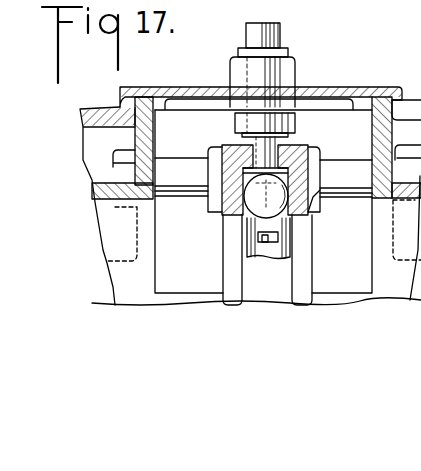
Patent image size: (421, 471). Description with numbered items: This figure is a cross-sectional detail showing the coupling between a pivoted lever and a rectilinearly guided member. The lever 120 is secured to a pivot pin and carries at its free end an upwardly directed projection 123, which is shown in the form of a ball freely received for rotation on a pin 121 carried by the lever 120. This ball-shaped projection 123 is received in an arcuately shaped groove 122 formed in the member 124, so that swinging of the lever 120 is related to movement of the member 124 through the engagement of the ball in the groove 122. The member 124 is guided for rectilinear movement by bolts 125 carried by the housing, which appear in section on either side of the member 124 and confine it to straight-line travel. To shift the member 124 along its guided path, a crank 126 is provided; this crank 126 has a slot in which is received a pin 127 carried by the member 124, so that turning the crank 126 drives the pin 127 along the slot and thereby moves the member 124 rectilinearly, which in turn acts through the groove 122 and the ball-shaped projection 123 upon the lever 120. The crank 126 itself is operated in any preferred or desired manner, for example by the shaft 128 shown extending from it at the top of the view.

The lever 120 is at (252, 247).
The pin 121 is at (221, 231).
The arcuately shaped groove 122 is at (245, 160).
The upwardly directed projection 123 is at (321, 160).
The member 124 is at (313, 190).
The bolts 125 is at (178, 170).
The crank 126 is at (296, 122).
The pin 127 is at (245, 112).
The shaft 128 is at (277, 38).